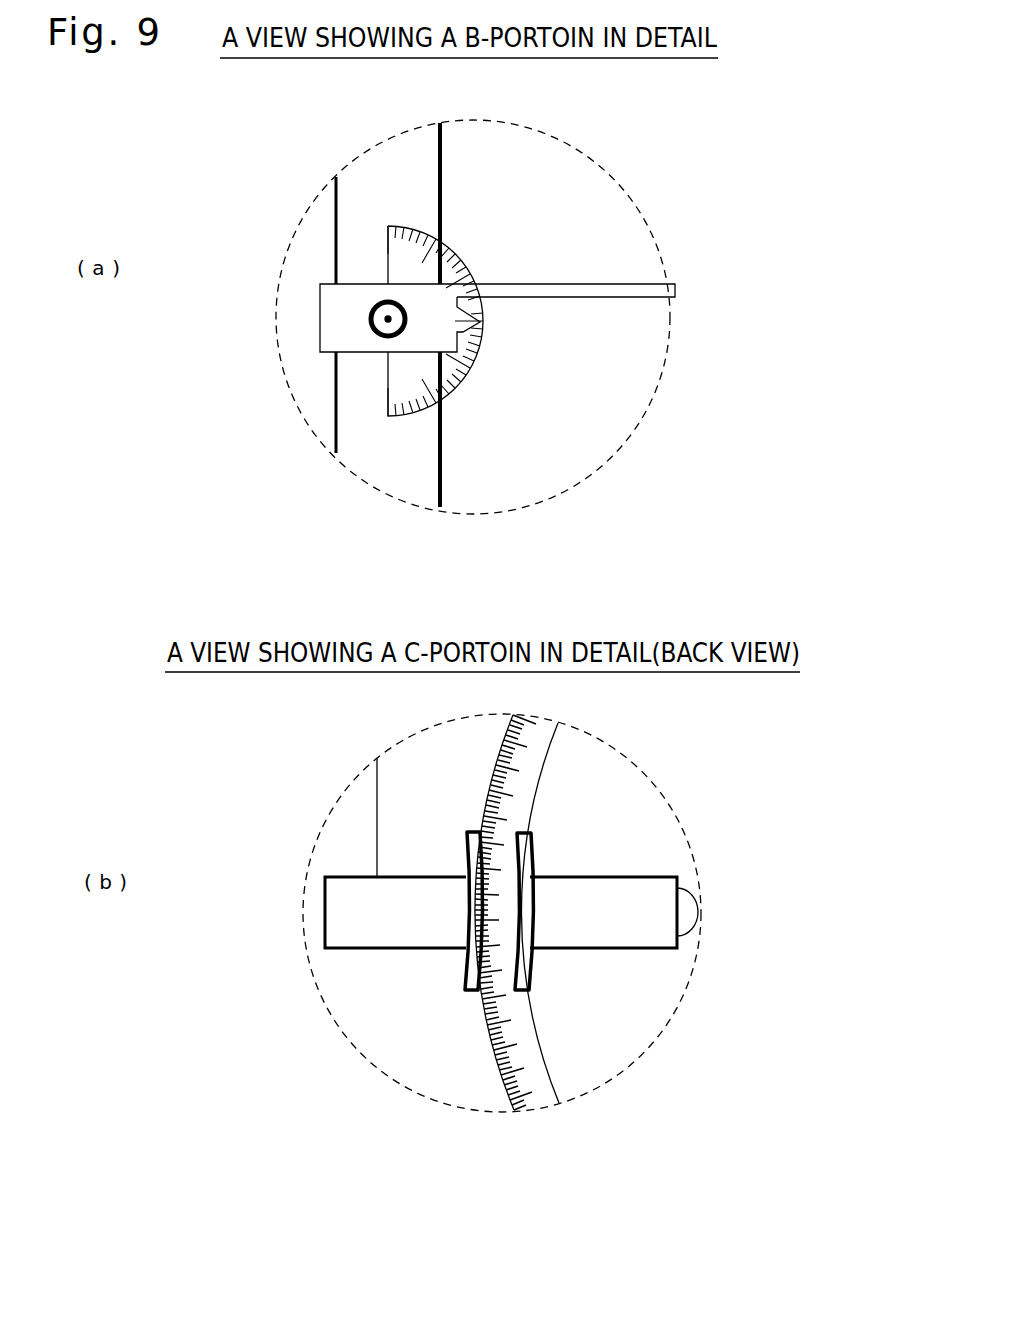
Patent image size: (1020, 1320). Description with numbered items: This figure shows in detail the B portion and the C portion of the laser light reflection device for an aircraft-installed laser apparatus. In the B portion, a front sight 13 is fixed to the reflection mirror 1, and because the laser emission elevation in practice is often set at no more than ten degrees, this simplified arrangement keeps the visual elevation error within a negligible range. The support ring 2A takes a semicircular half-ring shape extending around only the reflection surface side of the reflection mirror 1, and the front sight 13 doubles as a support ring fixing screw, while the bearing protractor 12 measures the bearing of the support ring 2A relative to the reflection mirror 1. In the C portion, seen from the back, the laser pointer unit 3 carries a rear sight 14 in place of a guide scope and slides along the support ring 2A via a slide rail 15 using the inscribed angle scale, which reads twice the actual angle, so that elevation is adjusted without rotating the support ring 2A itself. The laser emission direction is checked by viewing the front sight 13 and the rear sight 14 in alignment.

The reflection mirror 1 is at (442, 187).
The support ring 2A is at (630, 293).
The laser pointer unit 3 is at (625, 893).
The bearing protractor 12 is at (478, 336).
The front sight 13 is at (367, 315).
The rear sight 14 is at (377, 805).
The slide rail 15 is at (463, 970).